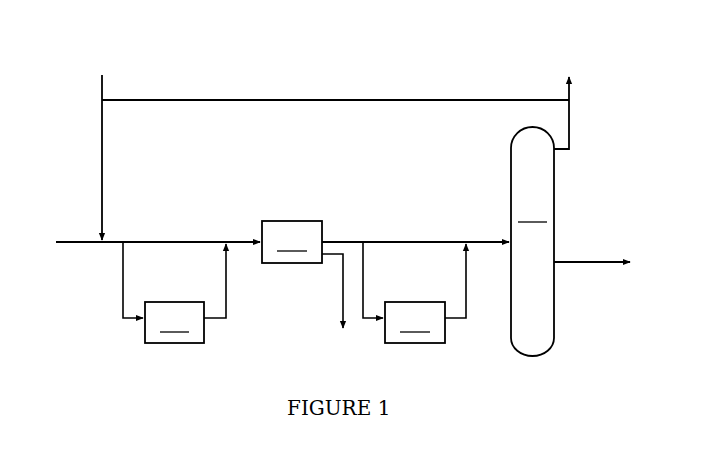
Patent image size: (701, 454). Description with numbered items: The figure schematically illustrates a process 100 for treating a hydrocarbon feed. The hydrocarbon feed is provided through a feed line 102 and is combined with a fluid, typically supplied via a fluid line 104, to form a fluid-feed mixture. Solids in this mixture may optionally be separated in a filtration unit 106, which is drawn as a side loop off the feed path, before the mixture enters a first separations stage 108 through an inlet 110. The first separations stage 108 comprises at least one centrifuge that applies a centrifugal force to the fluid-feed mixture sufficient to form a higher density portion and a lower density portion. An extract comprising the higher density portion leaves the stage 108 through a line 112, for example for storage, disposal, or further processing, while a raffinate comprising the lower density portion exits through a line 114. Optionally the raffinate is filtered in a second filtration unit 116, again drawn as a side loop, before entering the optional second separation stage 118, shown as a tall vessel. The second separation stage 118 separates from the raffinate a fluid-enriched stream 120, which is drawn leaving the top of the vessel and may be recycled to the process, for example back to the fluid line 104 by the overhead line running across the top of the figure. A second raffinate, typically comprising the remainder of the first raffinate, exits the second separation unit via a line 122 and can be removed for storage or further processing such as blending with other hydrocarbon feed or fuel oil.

The process 100 is at (463, 27).
The feed line 102 is at (82, 240).
The fluid line 104 is at (101, 186).
The filtration unit 106 is at (174, 292).
The first separations stage 108 is at (292, 242).
The inlet 110 is at (258, 238).
The line 112 is at (342, 280).
The line 114 is at (335, 240).
The second filtration unit 116 is at (414, 292).
The second separation stage 118 is at (532, 241).
The fluid-enriched stream 120 is at (570, 110).
The line 122 is at (578, 262).